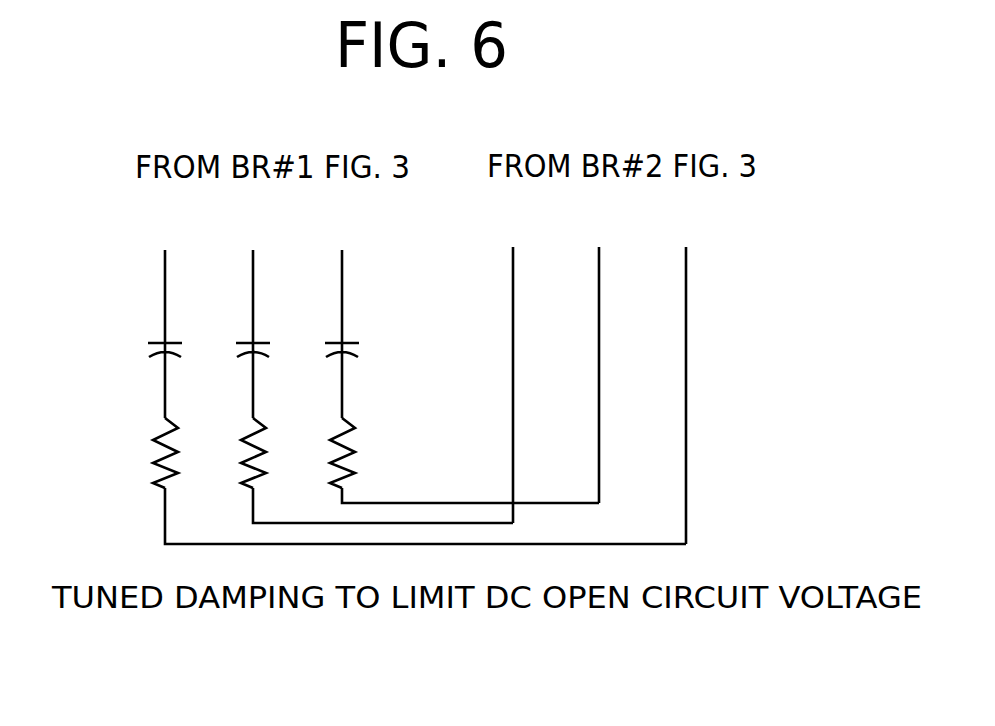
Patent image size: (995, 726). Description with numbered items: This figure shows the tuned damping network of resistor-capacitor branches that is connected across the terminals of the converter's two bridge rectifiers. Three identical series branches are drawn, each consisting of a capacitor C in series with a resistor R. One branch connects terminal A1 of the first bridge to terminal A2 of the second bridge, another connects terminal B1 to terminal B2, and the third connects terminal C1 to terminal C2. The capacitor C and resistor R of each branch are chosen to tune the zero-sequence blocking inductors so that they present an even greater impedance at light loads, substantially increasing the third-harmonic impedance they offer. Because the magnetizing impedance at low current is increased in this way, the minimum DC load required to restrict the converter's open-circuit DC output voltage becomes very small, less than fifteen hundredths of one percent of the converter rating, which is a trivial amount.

The terminal A1 is at (164, 279).
The terminal B1 is at (252, 279).
The terminal C1 is at (341, 279).
The terminal A2 is at (513, 369).
The terminal B2 is at (599, 359).
The terminal C2 is at (686, 379).
The capacitor C is at (231, 374).
The resistor R is at (232, 453).